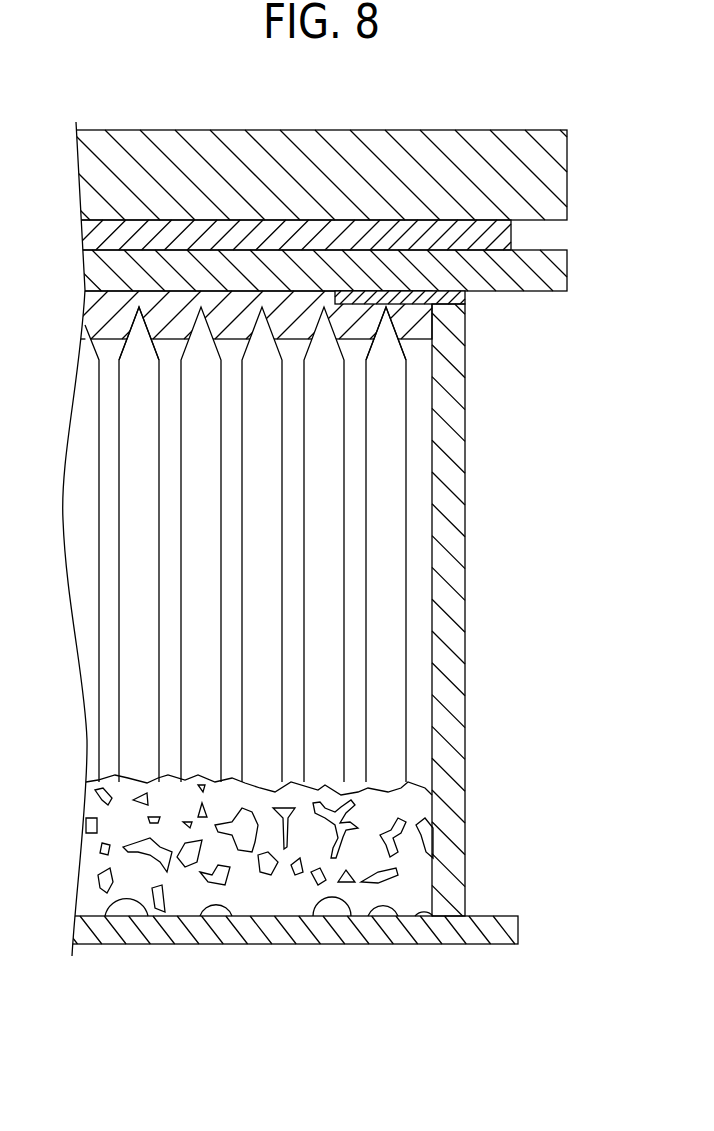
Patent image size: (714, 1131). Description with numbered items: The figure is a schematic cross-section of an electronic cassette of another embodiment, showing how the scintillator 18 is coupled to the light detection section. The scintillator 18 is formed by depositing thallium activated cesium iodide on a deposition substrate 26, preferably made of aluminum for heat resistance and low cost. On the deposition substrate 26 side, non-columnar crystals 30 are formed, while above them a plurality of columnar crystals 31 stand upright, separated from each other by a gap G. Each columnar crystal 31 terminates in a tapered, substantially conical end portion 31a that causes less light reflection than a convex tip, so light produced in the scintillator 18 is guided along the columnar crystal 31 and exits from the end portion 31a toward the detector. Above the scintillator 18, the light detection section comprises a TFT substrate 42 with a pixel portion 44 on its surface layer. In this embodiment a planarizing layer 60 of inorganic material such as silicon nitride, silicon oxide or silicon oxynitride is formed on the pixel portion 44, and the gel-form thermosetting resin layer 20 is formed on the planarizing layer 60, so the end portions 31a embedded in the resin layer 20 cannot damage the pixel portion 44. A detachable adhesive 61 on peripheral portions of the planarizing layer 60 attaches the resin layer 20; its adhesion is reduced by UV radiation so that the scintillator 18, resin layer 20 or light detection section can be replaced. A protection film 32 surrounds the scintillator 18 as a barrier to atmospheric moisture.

The TFT substrate 42 is at (550, 185).
The pixel portion 44 is at (490, 237).
The planarizing layer 60 is at (547, 272).
The detachable adhesive 61 is at (466, 297).
The resin layer 20 is at (418, 323).
The protection film 32 is at (447, 577).
The deposition substrate 26 is at (316, 945).
The columnar crystals 31 is at (190, 675).
The end portion 31a is at (118, 320).
The gap G is at (353, 478).
The non-columnar crystals 30 is at (410, 850).
The scintillator 18 is at (557, 735).